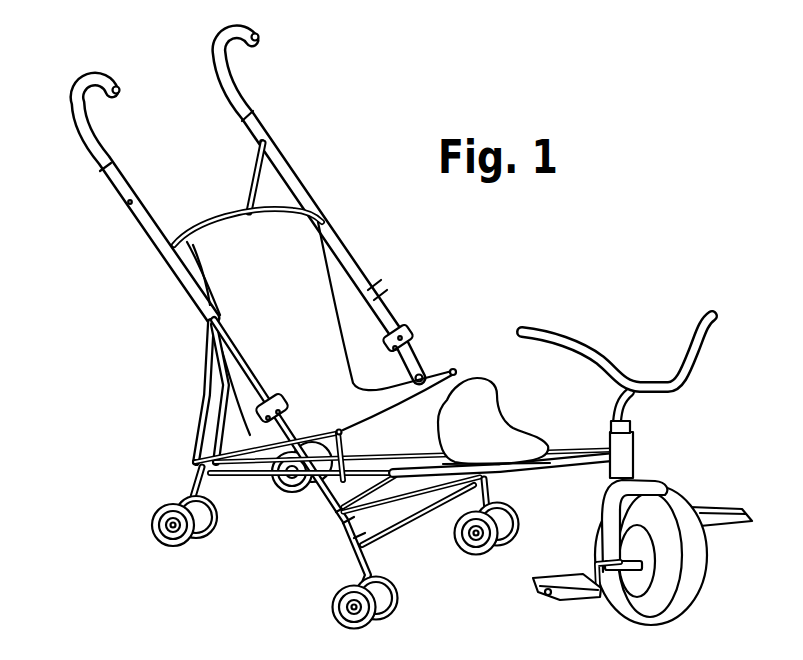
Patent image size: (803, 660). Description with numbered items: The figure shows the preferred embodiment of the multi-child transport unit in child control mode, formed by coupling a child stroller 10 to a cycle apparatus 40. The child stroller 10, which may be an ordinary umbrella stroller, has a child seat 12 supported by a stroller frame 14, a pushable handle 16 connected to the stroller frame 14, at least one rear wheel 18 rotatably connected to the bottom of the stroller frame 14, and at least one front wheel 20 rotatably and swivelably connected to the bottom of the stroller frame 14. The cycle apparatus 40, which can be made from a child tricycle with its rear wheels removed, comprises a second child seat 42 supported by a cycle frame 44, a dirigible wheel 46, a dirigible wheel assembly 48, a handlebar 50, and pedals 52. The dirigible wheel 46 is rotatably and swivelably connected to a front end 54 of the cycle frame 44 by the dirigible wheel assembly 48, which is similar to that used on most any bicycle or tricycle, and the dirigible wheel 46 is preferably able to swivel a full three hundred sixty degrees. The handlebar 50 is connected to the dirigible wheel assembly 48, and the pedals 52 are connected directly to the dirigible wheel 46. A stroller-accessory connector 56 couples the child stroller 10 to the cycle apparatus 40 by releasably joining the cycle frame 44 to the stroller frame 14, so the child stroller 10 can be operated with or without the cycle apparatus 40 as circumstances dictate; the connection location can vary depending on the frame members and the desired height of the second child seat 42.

The child stroller 10 is at (320, 326).
The child seat 12 is at (277, 295).
The stroller frame 14 is at (221, 430).
The pushable handle 16 is at (70, 104).
The rear wheel 18 is at (166, 526).
The front wheel 20 is at (350, 607).
The cycle apparatus 40 is at (570, 457).
The second child seat 42 is at (488, 400).
The cycle frame 44 is at (523, 473).
The dirigible wheel 46 is at (695, 582).
The dirigible wheel assembly 48 is at (632, 425).
The handlebar 50 is at (716, 320).
The pedals 52 is at (728, 522).
The front end 54 is at (636, 460).
The stroller-accessory connector 56 is at (333, 509).